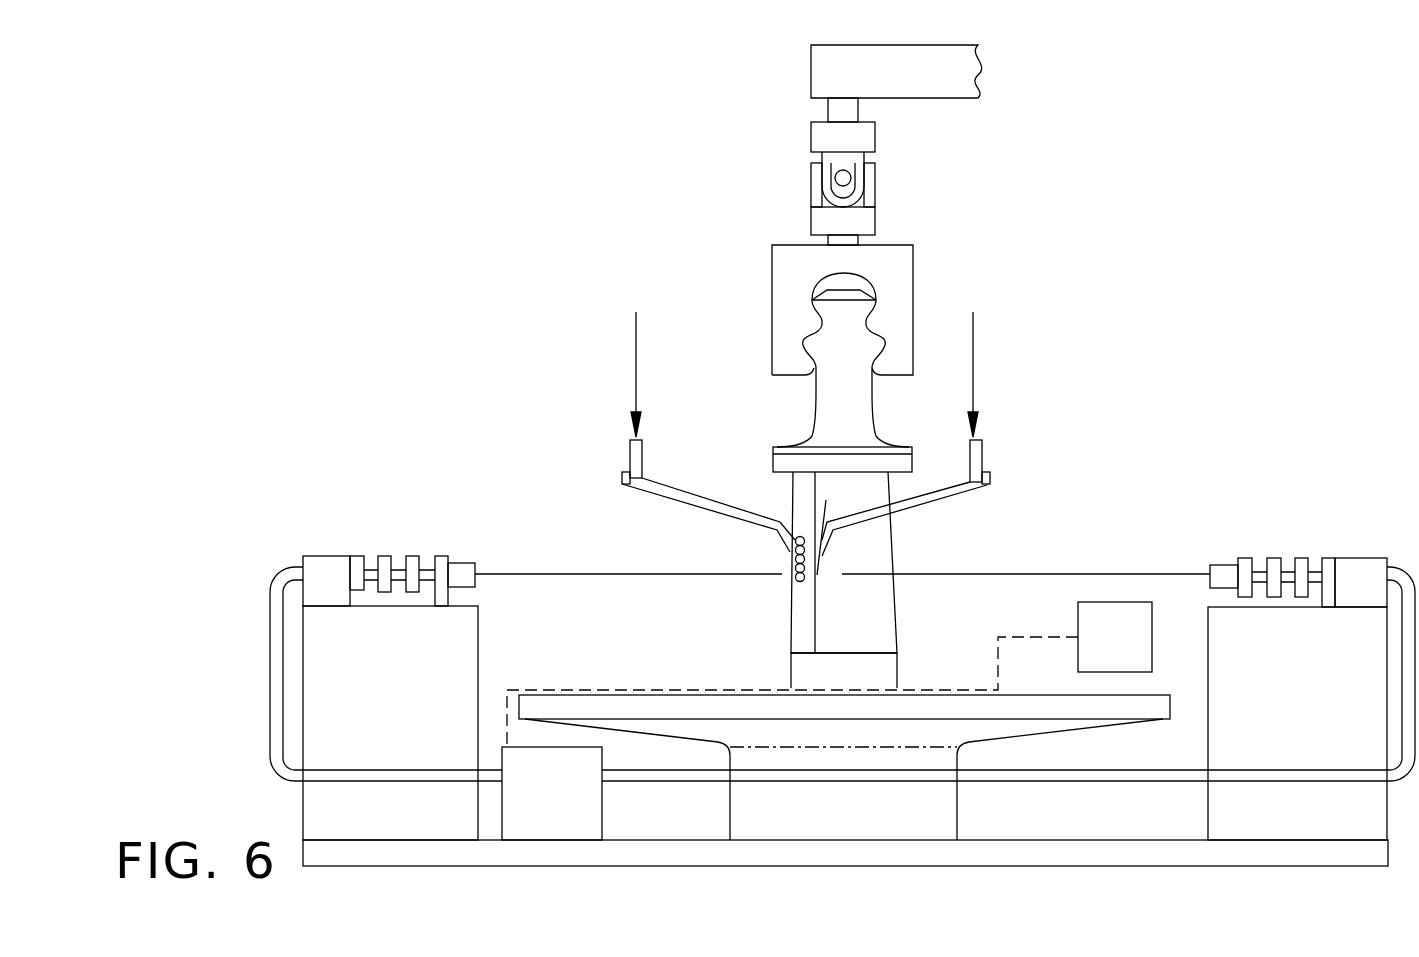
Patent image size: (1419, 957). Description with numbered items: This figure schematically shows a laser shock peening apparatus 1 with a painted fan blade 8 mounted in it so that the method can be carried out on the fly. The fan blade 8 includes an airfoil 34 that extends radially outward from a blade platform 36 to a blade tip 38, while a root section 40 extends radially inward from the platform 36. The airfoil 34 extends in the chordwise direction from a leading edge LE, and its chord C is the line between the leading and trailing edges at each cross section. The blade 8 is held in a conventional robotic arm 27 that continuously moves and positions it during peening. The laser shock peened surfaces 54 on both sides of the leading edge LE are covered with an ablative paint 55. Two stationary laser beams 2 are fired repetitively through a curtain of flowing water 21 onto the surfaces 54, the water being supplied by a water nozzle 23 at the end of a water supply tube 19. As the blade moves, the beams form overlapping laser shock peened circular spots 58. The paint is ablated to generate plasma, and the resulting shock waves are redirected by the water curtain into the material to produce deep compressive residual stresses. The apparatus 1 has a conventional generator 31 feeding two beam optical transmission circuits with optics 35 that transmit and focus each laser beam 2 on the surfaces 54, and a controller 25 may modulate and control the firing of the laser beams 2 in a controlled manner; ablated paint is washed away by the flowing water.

The laser shock peening apparatus 1 is at (1150, 331).
The laser beams 2 is at (515, 574).
The fan blade 8 is at (897, 540).
The water supply tube 19 is at (677, 500).
The curtain of flowing water 21 is at (786, 545).
The water nozzle 23 is at (827, 507).
The controller 25 is at (1132, 650).
The robotic arm 27 is at (890, 143).
The generator 31 is at (569, 803).
The airfoil 34 is at (887, 570).
The optics 35 is at (385, 556).
The blade platform 36 is at (912, 462).
The blade tip 38 is at (893, 666).
The root section 40 is at (870, 392).
The laser shock peened surfaces 54 is at (800, 618).
The ablative paint 55 is at (808, 601).
The laser shock peened circular spots 58 is at (795, 589).
The leading edge LE is at (793, 500).
The chord C is at (897, 678).